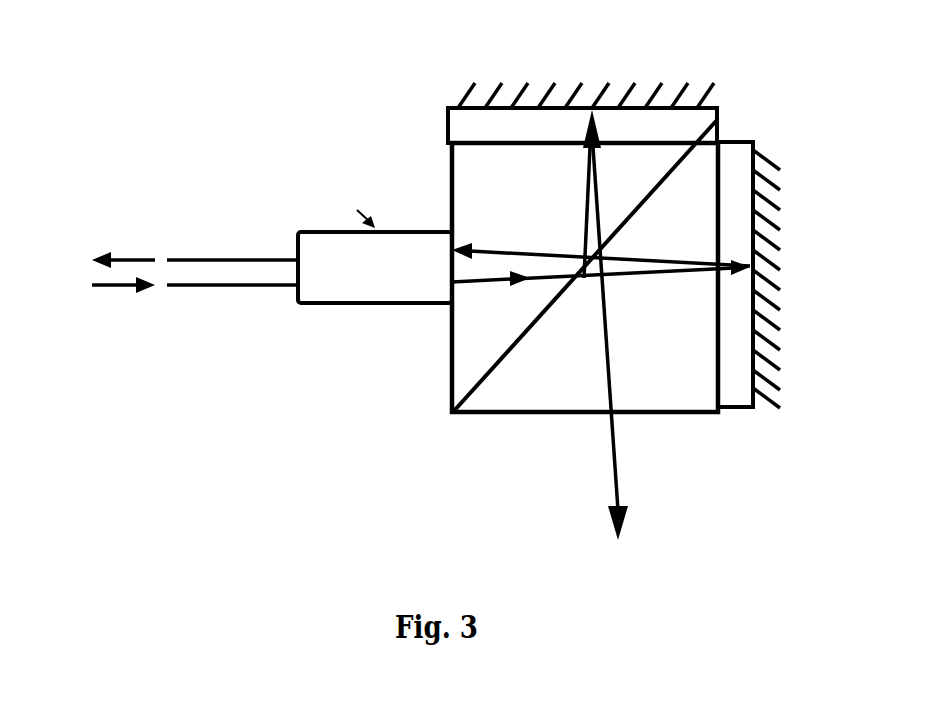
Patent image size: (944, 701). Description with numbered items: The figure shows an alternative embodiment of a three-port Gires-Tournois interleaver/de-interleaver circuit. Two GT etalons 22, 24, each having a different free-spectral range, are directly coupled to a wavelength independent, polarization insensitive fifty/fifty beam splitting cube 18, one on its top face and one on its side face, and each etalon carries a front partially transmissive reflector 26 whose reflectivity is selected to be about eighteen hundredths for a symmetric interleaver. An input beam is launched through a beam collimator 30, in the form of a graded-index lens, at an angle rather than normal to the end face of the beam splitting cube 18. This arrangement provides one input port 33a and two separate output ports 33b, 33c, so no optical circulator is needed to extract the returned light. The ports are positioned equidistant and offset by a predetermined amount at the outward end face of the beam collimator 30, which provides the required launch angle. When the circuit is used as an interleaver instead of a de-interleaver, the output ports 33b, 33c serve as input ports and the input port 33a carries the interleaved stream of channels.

The beam splitting cube 18 is at (525, 398).
The GT etalon 22 is at (512, 127).
The GT etalon 24 is at (736, 368).
The front partially transmissive reflector 26 is at (717, 108).
The beam collimator 30 is at (360, 303).
The input port 33a is at (210, 285).
The output port 33b is at (213, 255).
The output port 33c is at (613, 413).